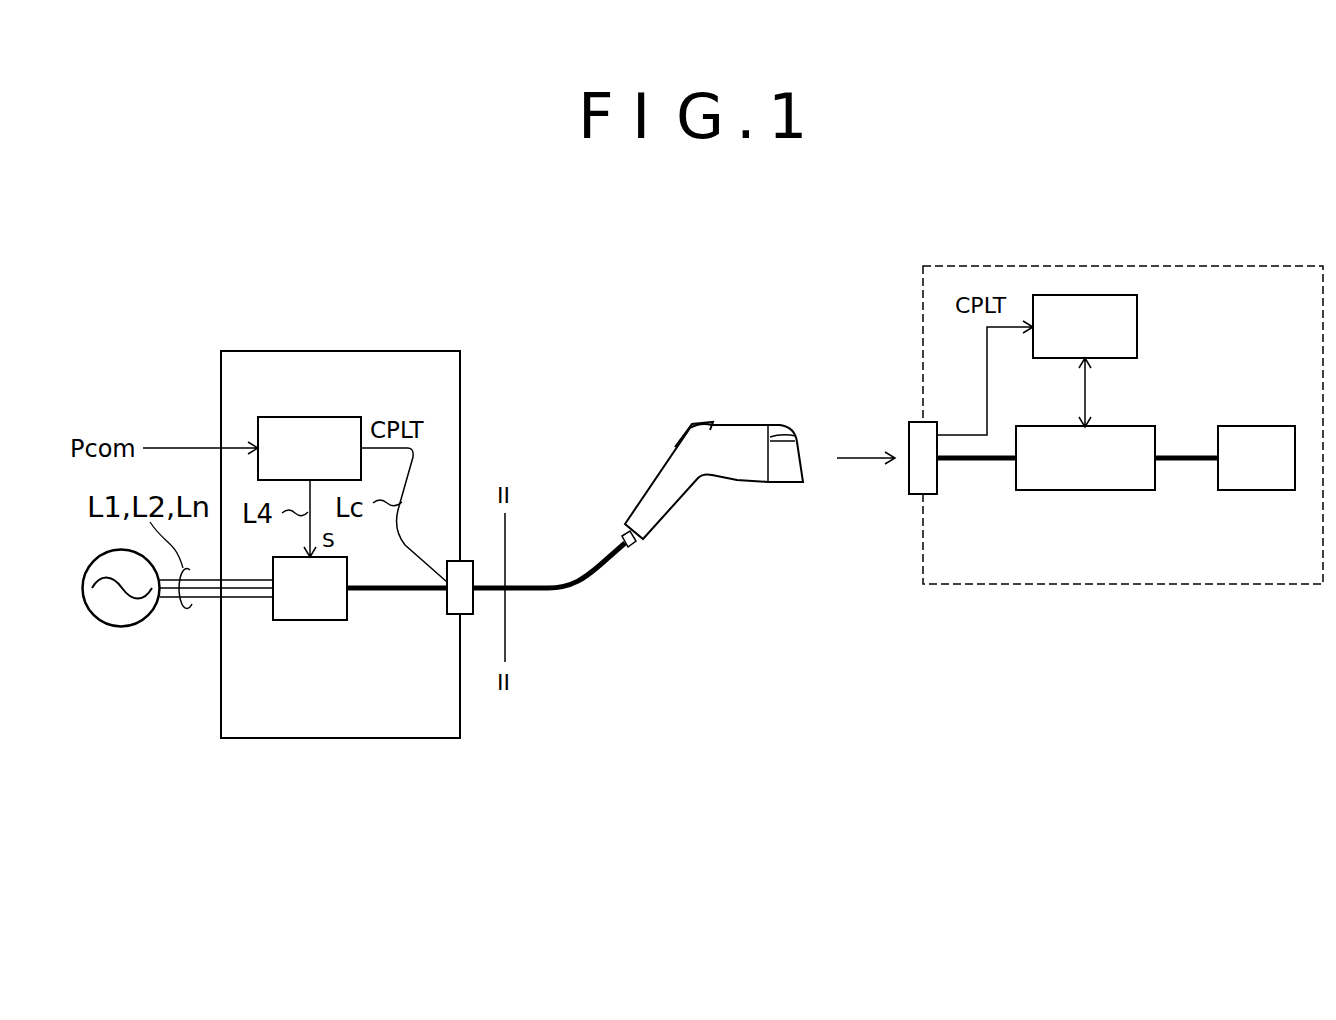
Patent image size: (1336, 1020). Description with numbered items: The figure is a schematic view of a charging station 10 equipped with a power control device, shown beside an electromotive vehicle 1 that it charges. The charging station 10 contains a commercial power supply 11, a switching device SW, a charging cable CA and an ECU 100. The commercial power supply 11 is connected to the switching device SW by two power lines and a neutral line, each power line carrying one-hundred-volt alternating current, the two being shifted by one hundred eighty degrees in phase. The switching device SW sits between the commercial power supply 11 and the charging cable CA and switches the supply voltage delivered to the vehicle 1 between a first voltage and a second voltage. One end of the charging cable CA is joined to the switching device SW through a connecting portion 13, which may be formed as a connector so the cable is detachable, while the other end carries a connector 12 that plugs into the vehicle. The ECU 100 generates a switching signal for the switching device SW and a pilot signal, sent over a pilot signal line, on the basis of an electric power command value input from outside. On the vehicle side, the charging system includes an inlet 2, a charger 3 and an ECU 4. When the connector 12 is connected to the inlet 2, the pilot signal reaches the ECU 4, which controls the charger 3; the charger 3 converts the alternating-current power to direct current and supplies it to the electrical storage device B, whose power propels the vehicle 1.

The vehicle 1 is at (1287, 267).
The inlet 2 is at (935, 495).
The charger 3 is at (1085, 491).
The ECU 4 is at (1137, 327).
The charging station 10 is at (405, 351).
The commercial power supply 11 is at (120, 628).
The connector 12 is at (748, 482).
The connecting portion 13 is at (448, 616).
The ECU 100 is at (310, 417).
The switching device SW is at (310, 620).
The charging cable CA is at (568, 590).
The electrical storage device B is at (1255, 491).